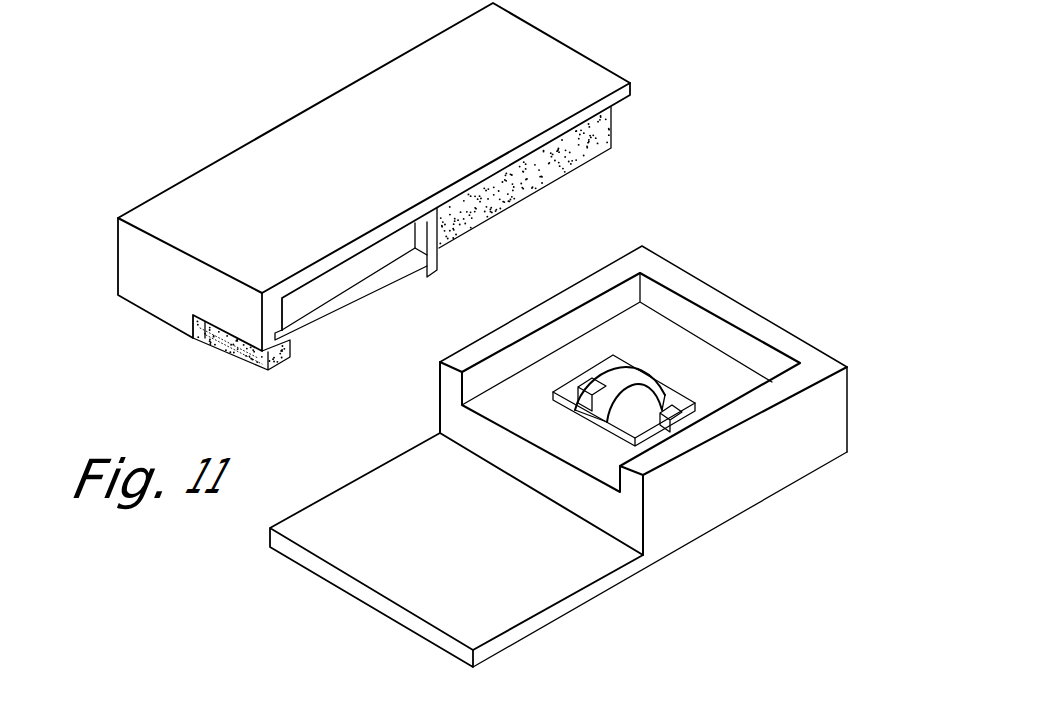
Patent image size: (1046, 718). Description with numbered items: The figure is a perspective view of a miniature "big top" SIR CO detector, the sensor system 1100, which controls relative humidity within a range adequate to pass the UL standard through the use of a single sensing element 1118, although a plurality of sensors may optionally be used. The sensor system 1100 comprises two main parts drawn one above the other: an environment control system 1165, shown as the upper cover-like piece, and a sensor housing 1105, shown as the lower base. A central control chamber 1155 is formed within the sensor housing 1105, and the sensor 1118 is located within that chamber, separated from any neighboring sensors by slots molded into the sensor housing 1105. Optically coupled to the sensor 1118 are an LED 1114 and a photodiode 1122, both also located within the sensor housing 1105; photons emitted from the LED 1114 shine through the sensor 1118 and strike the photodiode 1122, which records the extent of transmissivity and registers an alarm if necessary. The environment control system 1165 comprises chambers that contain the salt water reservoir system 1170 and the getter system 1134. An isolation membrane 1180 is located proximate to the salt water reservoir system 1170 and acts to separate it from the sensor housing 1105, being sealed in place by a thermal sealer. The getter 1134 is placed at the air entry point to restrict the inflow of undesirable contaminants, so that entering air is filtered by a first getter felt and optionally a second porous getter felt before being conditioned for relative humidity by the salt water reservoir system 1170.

The sensor system 1100 is at (207, 147).
The environment control system 1165 is at (106, 204).
The getter system 1134 is at (590, 140).
The salt water reservoir system 1170 is at (377, 263).
The isolation membrane 1180 is at (355, 300).
The sensor housing 1105 is at (876, 350).
The central control chamber 1155 is at (735, 353).
The LED 1114 is at (589, 374).
The sensing element 1118 is at (633, 373).
The photodiode 1122 is at (653, 420).